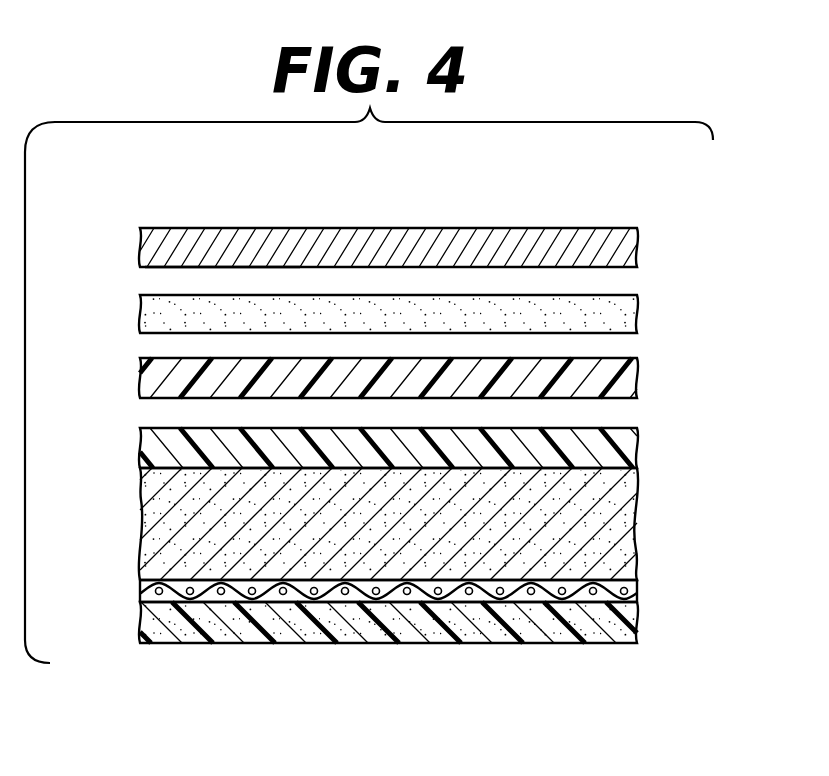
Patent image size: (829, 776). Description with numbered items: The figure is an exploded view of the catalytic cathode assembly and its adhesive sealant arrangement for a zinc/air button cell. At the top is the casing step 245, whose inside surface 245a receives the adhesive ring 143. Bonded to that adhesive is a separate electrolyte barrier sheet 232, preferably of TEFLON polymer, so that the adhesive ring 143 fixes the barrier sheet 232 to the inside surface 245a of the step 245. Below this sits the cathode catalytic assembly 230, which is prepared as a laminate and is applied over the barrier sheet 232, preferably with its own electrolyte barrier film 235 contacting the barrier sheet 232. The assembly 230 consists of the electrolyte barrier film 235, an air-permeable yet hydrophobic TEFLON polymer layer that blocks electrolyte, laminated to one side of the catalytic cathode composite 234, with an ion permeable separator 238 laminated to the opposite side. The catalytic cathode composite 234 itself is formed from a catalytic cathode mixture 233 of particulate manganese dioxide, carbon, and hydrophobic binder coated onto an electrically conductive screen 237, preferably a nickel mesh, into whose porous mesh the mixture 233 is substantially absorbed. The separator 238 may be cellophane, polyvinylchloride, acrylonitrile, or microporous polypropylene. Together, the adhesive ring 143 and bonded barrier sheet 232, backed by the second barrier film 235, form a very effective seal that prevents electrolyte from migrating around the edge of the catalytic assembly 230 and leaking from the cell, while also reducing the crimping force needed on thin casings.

The step 245 is at (626, 243).
The inside surface of step 245a is at (172, 268).
The adhesive ring 143 is at (628, 320).
The electrolyte barrier sheet 232 is at (628, 380).
The cathode catalytic assembly 230 is at (115, 428).
The electrolyte barrier film 235 is at (630, 450).
The catalytic cathode mixture 233 is at (620, 500).
The catalytic cathode composite 234 is at (458, 595).
The electrically conductive screen 237 is at (445, 619).
The ion permeable separator 238 is at (580, 636).